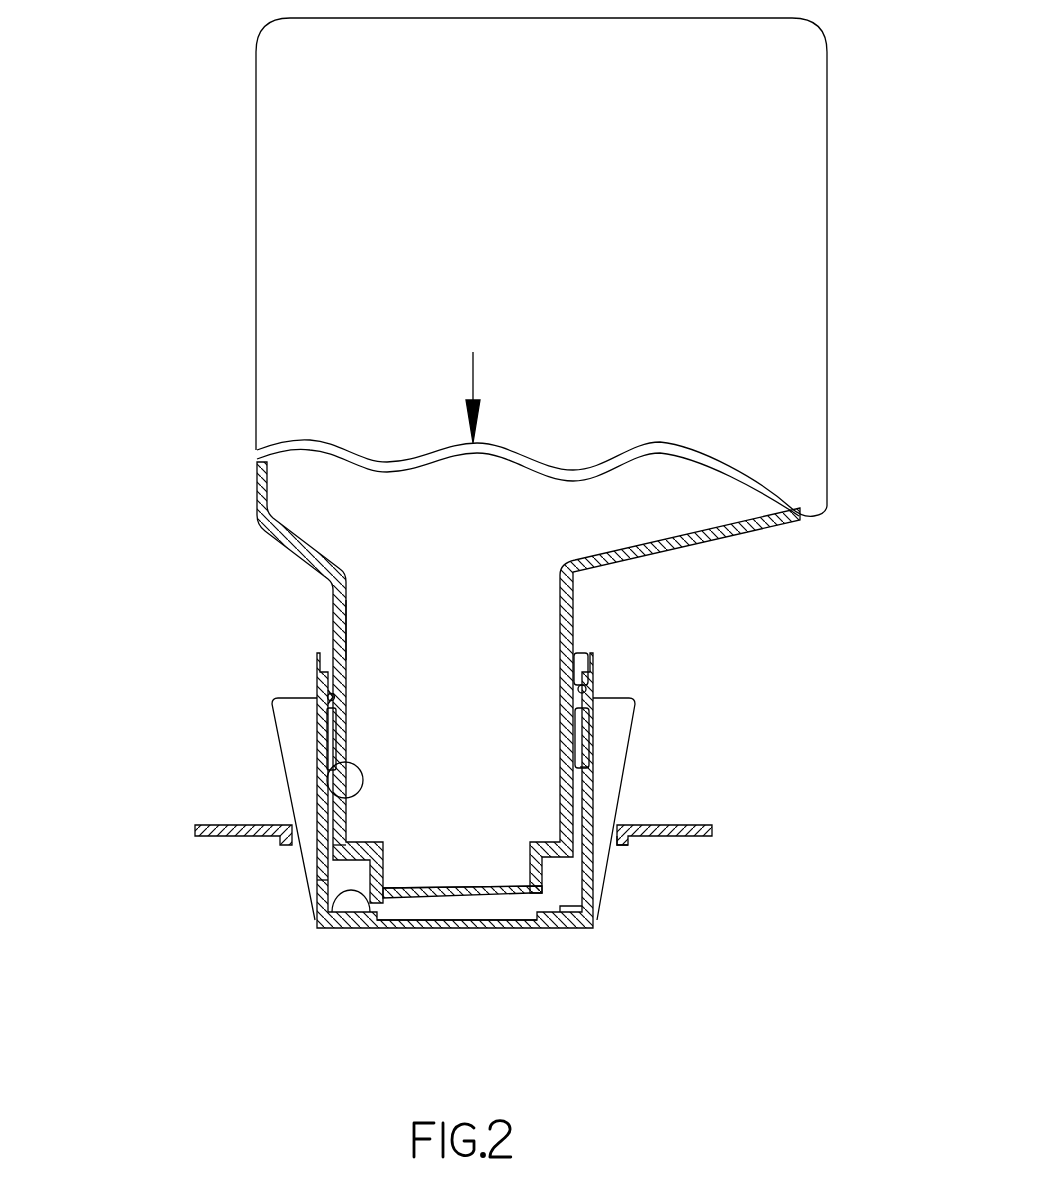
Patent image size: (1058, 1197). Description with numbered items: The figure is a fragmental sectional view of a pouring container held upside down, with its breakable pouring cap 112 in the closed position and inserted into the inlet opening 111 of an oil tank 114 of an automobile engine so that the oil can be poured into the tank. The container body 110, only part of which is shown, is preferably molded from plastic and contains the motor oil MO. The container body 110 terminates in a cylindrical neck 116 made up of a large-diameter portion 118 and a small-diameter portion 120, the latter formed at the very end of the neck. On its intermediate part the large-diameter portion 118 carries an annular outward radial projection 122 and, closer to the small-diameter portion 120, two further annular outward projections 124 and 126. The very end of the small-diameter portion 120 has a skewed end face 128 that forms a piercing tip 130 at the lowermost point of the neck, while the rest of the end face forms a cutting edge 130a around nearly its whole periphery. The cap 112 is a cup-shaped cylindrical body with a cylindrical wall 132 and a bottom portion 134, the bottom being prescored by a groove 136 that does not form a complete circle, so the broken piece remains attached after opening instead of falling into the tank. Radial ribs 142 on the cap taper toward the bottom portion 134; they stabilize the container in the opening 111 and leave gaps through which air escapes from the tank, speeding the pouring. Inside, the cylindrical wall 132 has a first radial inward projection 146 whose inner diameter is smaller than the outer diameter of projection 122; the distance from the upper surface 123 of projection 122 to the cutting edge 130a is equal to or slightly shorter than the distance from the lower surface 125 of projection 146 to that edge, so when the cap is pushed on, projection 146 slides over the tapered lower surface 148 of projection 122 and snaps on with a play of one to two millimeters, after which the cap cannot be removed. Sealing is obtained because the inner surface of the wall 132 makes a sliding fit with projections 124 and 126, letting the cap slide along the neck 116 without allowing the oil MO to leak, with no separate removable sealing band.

The container body 110 is at (232, 480).
The inlet opening 111 is at (620, 848).
The cap 112 is at (265, 895).
The oil tank 114 is at (712, 823).
The cylindrical neck 116 is at (265, 585).
The large-diameter portion 118 is at (572, 618).
The small-diameter portion 120 is at (597, 878).
The annular outward radial projection 122 is at (589, 694).
The upper surface 123 is at (585, 690).
The annular outward projection 124 is at (586, 767).
The lower surface 125 is at (346, 668).
The annular outward projection 126 is at (333, 840).
The skewed end face 128 is at (523, 922).
The piercing tip 130 is at (317, 927).
The cutting edge 130a is at (460, 897).
The cylindrical wall 132 is at (336, 762).
The bottom portion 134 is at (433, 927).
The groove 136 is at (378, 925).
The radial ribs 142 is at (303, 818).
The first radial inward projection 146 is at (318, 695).
The tapered lower surface 148 is at (592, 713).
The motor oil MO is at (485, 515).